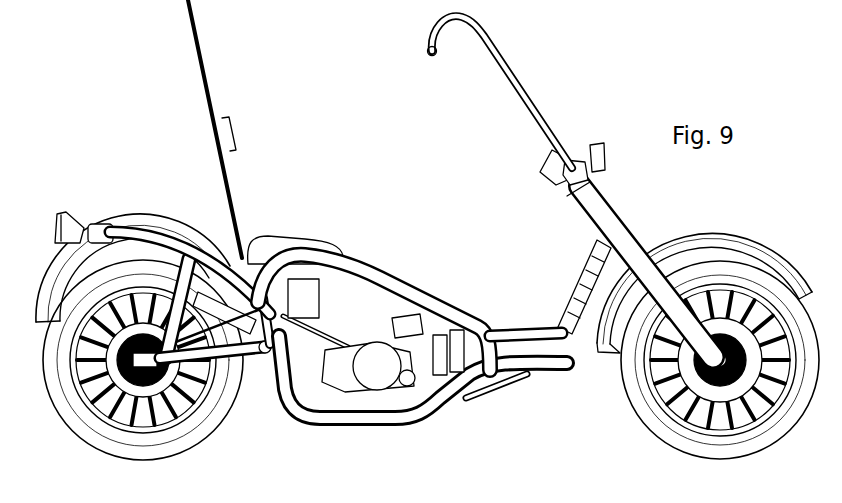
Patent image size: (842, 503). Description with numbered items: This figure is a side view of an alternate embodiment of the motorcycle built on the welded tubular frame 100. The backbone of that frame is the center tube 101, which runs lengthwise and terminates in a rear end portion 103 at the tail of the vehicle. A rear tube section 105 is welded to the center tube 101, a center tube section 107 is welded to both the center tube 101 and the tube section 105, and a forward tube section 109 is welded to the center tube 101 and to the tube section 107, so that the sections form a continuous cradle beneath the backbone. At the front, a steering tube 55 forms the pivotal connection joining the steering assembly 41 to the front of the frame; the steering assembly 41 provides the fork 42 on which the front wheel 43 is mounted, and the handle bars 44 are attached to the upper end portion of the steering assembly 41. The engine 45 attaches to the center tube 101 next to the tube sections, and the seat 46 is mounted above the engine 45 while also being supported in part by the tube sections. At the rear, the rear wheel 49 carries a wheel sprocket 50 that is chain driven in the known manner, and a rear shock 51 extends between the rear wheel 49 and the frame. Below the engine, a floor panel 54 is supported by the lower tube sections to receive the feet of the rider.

The frame 100 is at (417, 250).
The center tube 101 is at (110, 237).
The rear end portion 103 is at (42, 258).
The tube section 105 is at (172, 228).
The tube section 107 is at (420, 298).
The tube section 109 is at (531, 335).
The steering assembly 41 is at (647, 247).
The fork 42 is at (618, 372).
The front wheel 43 is at (715, 450).
The handle bars 44 is at (525, 97).
The engine 45 is at (380, 357).
The seat 46 is at (277, 250).
The rear wheel 49 is at (82, 423).
The wheel sprocket 50 is at (143, 388).
The rear shock 51 is at (182, 283).
The floor panel 54 is at (523, 380).
The steering tube 55 is at (580, 205).